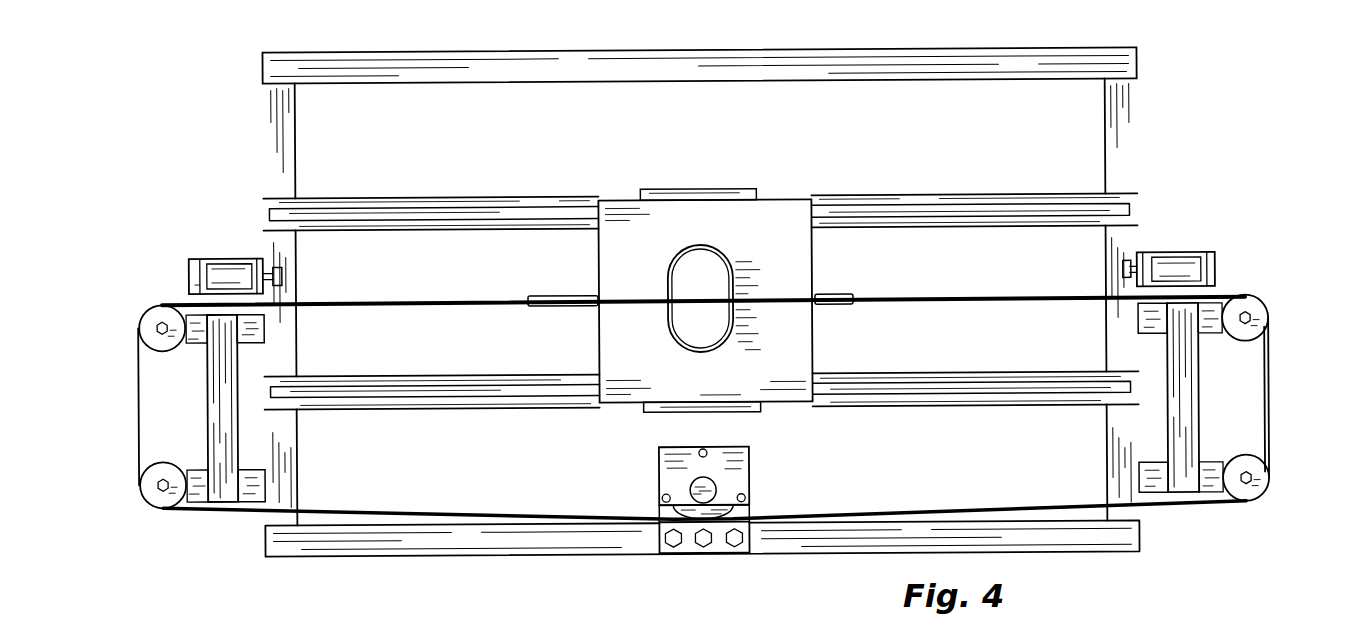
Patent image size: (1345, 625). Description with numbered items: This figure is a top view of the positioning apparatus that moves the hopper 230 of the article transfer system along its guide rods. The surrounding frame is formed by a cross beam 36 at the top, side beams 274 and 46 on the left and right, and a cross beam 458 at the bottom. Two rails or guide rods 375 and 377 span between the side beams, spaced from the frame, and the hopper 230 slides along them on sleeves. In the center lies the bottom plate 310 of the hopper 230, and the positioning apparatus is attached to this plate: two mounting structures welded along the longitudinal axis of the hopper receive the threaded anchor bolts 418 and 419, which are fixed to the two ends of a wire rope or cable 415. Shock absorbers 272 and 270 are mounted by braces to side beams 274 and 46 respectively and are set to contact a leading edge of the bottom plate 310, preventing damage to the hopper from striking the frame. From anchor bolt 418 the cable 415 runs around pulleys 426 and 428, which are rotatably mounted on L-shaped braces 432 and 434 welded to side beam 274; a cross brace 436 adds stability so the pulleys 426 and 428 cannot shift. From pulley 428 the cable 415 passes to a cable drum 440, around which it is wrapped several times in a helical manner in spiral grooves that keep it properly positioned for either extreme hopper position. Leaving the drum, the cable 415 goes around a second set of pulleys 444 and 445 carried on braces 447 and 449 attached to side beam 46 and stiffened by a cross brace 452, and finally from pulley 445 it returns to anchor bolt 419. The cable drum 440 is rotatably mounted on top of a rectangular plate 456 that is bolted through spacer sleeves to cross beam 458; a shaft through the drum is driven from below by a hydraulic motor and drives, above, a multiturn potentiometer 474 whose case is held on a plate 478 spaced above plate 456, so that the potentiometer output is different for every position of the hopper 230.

The cross beam 36 is at (585, 65).
The side beam 274 is at (280, 148).
The side beam 46 is at (1128, 160).
The cross beam 458 is at (507, 538).
The guide rod 377 is at (932, 212).
The guide rod 375 is at (918, 395).
The bottom plate 310 is at (616, 255).
The hopper 230 is at (813, 255).
The anchor bolt 418 is at (570, 306).
The anchor bolt 419 is at (818, 306).
The shock absorber 272 is at (224, 270).
The shock absorber 270 is at (1180, 263).
The cable 415 is at (138, 412).
The pulley 426 is at (150, 311).
The pulley 428 is at (145, 490).
The pulley 445 is at (1258, 319).
The pulley 444 is at (1250, 497).
The cross brace 436 is at (219, 437).
The L-shaped brace 432 is at (202, 334).
The L-shaped brace 434 is at (203, 488).
The brace 449 is at (1210, 312).
The cross brace 452 is at (1188, 391).
The brace 447 is at (1206, 470).
The plate 478 is at (683, 466).
The potentiometer 474 is at (712, 486).
The cable drum 440 is at (656, 512).
The rectangular plate 456 is at (683, 546).